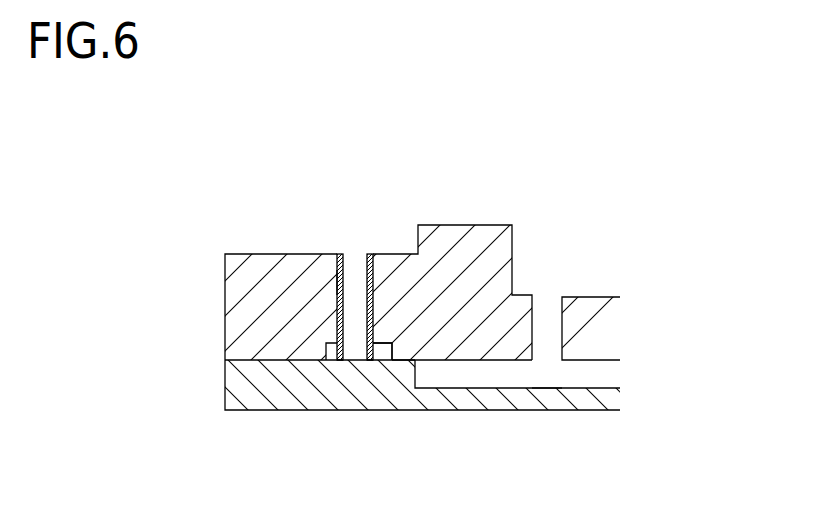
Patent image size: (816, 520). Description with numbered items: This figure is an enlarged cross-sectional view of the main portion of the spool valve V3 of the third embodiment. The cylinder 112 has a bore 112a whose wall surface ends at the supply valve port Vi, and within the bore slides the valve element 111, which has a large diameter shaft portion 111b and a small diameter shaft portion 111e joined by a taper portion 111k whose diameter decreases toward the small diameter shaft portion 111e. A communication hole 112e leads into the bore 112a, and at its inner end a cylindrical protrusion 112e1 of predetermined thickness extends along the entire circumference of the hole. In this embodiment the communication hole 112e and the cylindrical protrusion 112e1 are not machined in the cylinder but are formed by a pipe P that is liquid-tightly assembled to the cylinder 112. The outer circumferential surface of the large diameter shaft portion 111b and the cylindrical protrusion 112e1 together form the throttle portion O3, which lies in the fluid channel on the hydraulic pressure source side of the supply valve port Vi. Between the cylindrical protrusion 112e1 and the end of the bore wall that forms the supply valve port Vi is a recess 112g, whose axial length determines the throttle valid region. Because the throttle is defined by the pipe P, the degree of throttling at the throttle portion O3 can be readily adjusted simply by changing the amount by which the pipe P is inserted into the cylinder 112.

The cylinder 112 is at (240, 254).
The communication hole 112e is at (343, 272).
The recess 112g is at (377, 320).
The pipe P is at (336, 283).
The supply valve port Vi is at (382, 348).
The bore 112a is at (482, 360).
The small diameter shaft portion 111e is at (582, 390).
The valve element 111 is at (247, 403).
The large diameter shaft portion 111b is at (252, 360).
The taper portion 111k is at (415, 366).
The cylindrical protrusion 112e1 is at (342, 360).
The throttle portion O3 is at (368, 360).
The spool valve V3 is at (547, 421).